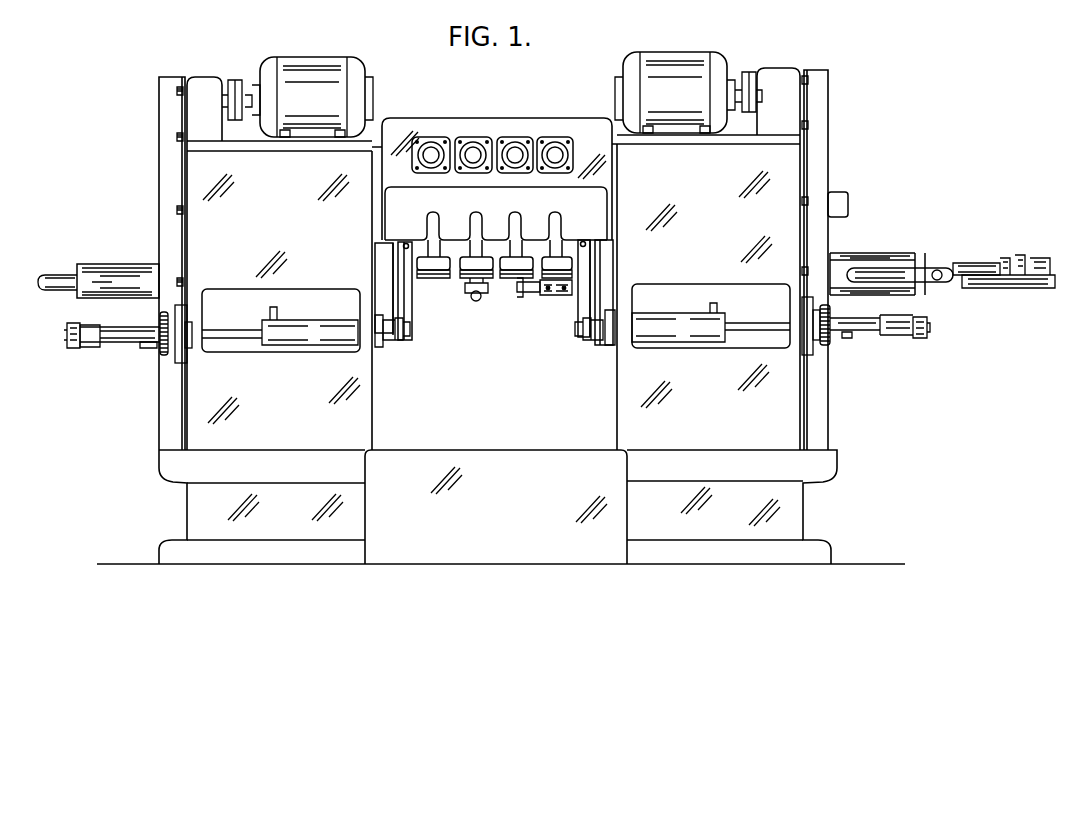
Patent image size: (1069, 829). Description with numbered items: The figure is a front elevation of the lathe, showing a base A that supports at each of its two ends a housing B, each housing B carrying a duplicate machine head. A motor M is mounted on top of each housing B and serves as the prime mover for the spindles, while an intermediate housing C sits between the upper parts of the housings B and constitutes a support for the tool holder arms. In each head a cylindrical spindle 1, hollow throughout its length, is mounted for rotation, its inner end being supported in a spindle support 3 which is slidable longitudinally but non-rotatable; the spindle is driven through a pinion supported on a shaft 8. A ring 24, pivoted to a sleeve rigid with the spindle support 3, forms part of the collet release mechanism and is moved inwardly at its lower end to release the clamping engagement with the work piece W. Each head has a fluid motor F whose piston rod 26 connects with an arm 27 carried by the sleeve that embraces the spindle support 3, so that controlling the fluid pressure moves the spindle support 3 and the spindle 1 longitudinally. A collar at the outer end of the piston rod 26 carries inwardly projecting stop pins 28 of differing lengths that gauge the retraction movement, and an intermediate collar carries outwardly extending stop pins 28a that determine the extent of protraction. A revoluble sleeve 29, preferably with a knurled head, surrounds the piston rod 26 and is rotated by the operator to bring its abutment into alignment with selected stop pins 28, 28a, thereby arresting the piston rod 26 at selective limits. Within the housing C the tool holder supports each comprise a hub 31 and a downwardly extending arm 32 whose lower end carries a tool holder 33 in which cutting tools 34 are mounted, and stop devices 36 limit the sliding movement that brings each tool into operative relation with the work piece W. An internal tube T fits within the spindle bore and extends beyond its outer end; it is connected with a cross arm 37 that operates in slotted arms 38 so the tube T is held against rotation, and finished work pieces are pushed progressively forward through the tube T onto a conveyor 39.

The spindle 1 is at (868, 253).
The spindle support 3 is at (602, 273).
The shaft 8 is at (850, 205).
The ring 24 is at (538, 373).
The piston rod 26 is at (878, 332).
The arm 27 is at (568, 400).
The stop pins 28 is at (921, 342).
The stop pins 28a is at (846, 340).
The revoluble sleeve 29 is at (834, 316).
The hub 31 is at (565, 207).
The arm 32 is at (430, 279).
The tool holder 33 is at (550, 308).
The cutting tools 34 is at (518, 297).
The stop devices 36 is at (473, 150).
The cross arm 37 is at (939, 281).
The slotted arms 38 is at (935, 262).
The conveyor 39 is at (1005, 292).
The work piece W is at (1032, 260).
The tube T is at (975, 262).
The intermediate housing C is at (498, 126).
The motor M is at (492, 94).
The fluid motor F is at (496, 318).
The housing B is at (493, 297).
The base A is at (496, 507).